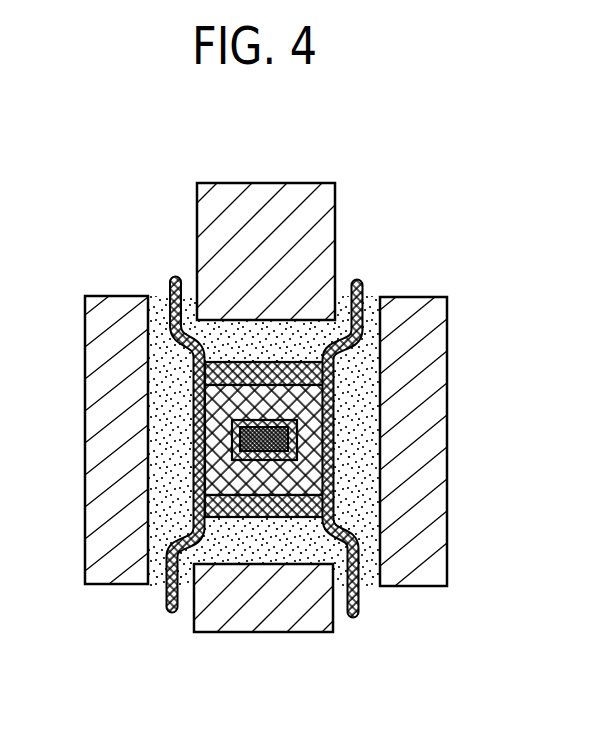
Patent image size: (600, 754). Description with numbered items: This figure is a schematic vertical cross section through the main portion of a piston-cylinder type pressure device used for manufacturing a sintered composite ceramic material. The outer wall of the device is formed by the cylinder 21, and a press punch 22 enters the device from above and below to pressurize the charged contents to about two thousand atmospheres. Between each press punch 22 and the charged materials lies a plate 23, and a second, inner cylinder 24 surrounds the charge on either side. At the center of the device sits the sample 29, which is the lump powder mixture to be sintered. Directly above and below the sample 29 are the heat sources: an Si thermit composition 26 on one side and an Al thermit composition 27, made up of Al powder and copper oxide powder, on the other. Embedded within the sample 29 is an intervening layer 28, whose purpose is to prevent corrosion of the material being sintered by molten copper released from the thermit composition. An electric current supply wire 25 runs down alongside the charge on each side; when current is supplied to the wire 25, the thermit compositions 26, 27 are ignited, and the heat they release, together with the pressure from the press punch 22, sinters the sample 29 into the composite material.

The cylinder 21 is at (447, 498).
The press punch 22 is at (335, 203).
The plate 23 is at (247, 332).
The cylinder 24 is at (372, 386).
The electric current supply wire 25 is at (362, 284).
The Si thermit composition 26 is at (213, 372).
The Al thermit composition 27 is at (210, 478).
The intervening layer 28 is at (297, 437).
The sample 29 is at (212, 431).